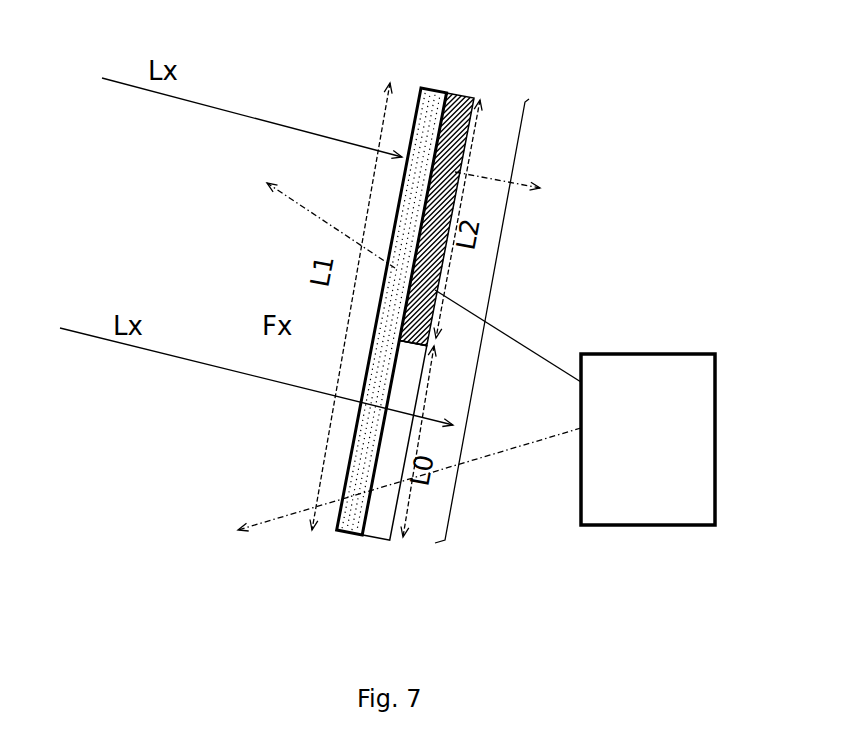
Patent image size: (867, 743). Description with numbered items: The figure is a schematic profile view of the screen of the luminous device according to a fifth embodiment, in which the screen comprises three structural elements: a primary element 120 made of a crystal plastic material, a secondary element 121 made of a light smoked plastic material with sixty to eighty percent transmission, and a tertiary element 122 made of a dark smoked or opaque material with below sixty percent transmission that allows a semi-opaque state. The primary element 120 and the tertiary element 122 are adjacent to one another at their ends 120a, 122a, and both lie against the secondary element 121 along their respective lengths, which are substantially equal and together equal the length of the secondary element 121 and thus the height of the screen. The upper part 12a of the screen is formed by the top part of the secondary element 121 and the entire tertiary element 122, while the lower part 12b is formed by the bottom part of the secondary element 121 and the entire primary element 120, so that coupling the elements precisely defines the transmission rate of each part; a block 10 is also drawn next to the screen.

The light source 10 is at (648, 439).
The upper part 12a is at (505, 226).
The lower part 12b is at (466, 442).
The primary element 120 is at (360, 328).
The end of primary element 120a is at (448, 354).
The secondary element 121 is at (412, 210).
The tertiary element 122 is at (474, 95).
The end of tertiary element 122a is at (444, 337).